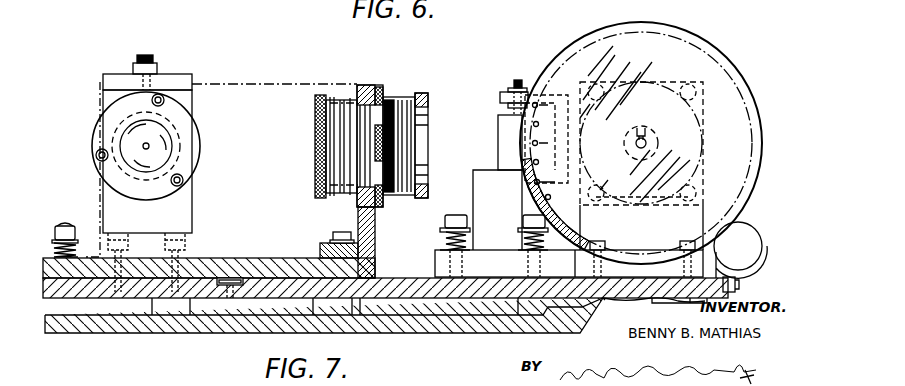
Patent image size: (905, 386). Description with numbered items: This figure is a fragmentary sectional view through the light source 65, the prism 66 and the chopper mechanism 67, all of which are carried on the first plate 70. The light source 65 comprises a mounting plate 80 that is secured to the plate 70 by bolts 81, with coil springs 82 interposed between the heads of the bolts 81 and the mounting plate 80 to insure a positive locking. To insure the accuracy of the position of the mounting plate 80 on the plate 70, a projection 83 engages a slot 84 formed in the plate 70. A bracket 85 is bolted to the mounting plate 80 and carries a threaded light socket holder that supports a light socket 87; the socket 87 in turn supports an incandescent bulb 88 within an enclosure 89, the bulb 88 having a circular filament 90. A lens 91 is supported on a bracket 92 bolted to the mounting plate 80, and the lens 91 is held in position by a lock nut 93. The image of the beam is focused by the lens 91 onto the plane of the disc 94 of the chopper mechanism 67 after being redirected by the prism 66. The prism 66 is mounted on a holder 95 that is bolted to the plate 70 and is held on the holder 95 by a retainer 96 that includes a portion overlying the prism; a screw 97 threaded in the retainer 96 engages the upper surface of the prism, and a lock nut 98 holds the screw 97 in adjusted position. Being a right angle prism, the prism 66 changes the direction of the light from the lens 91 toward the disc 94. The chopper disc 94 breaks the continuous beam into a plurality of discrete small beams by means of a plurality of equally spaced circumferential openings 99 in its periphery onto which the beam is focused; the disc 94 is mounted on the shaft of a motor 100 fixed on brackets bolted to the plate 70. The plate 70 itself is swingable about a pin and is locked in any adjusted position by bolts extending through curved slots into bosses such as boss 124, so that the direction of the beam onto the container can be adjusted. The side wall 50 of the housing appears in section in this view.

The side wall 50 is at (376, 330).
The light source 65 is at (87, 189).
The prism 66 is at (490, 134).
The chopper mechanism 67 is at (671, 28).
The first plate 70 is at (393, 273).
The mounting plate 80 is at (45, 268).
The bolts 81 is at (57, 228).
The coil springs 82 is at (52, 248).
The projection 83 is at (228, 280).
The slot 84 is at (230, 298).
The bracket 85 is at (170, 74).
The light socket 87 is at (180, 122).
The bulb 88 is at (170, 140).
The enclosure 89 is at (268, 83).
The circular filament 90 is at (150, 146).
The lens 91 is at (395, 96).
The bracket 92 is at (358, 212).
The lock nut 93 is at (378, 88).
The disc 94 is at (698, 68).
The holder 95 is at (493, 215).
The retainer 96 is at (500, 95).
The screw 97 is at (517, 80).
The lock nut 98 is at (512, 87).
The circumferential openings 99 is at (538, 125).
The motor 100 is at (697, 115).
The boss 124 is at (175, 305).